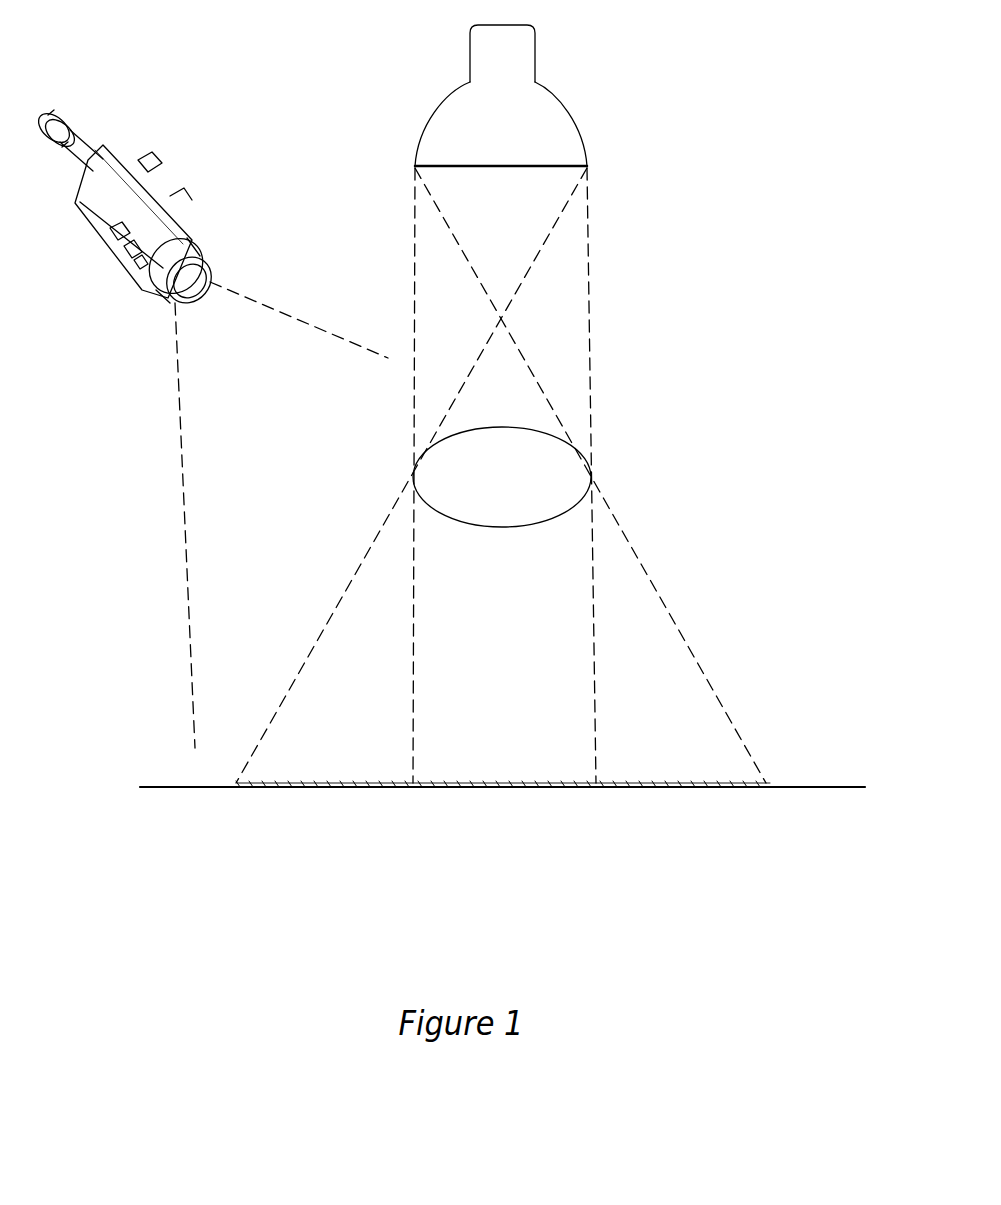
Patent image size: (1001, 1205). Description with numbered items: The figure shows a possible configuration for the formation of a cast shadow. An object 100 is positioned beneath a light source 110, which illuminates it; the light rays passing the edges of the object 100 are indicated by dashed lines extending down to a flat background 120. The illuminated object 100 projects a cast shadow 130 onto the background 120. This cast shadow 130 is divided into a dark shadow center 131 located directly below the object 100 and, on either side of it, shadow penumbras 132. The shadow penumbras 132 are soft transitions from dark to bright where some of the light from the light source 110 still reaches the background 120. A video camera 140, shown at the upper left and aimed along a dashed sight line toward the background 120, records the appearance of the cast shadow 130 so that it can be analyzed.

The object 100 is at (582, 472).
The light source 110 is at (555, 107).
The background 120 is at (188, 788).
The cast shadow 130 is at (770, 791).
The shadow center 131 is at (596, 771).
The shadow penumbras 132 is at (413, 771).
The video camera 140 is at (183, 192).